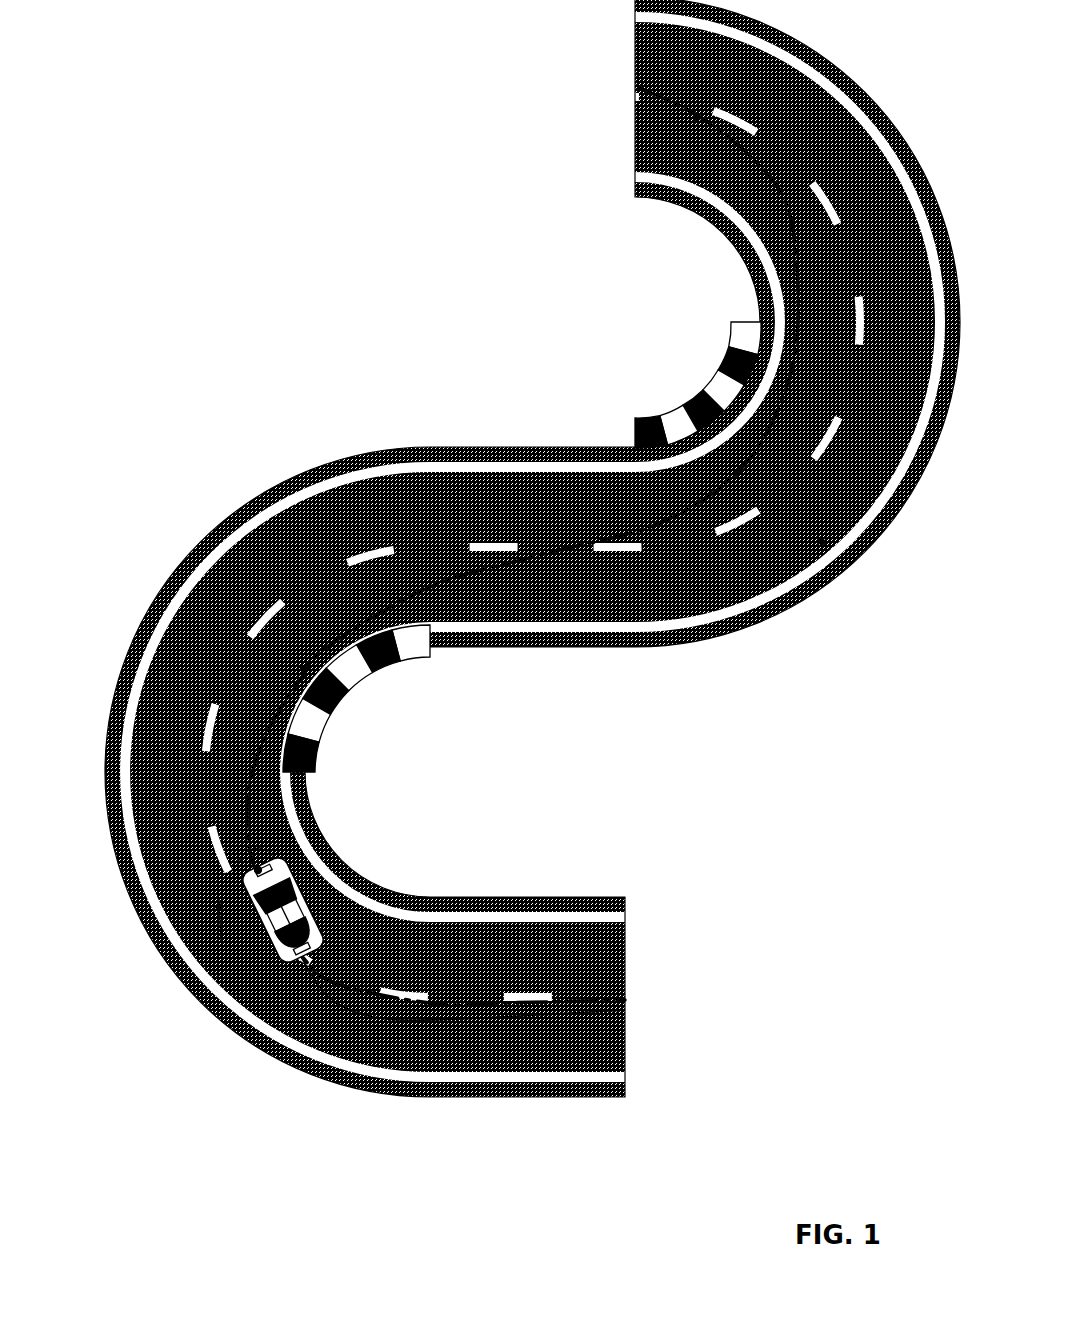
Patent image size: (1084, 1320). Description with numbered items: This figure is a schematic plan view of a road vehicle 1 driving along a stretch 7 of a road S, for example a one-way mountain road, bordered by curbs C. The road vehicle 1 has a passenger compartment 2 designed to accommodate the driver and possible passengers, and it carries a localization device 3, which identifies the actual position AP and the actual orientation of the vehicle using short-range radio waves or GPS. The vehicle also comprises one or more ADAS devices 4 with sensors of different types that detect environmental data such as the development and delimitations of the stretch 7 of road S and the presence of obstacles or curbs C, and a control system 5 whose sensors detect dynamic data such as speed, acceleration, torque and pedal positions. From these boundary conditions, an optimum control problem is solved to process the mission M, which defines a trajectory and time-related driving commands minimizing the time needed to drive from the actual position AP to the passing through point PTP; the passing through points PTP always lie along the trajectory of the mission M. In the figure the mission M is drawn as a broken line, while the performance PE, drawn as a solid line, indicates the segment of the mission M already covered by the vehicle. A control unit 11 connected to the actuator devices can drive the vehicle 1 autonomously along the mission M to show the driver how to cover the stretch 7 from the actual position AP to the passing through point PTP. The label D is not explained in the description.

The road S is at (136, 621).
The stretch of road 7 is at (545, 452).
The curbs C is at (677, 418).
The mission M is at (371, 601).
The performance PE is at (445, 1029).
The passing through point PTP is at (697, 118).
The road width distance D is at (530, 627).
The actual position AP is at (240, 866).
The road vehicle 1 is at (256, 965).
The control unit 11 is at (278, 860).
The passenger compartment 2 is at (311, 889).
The localization device 3 is at (290, 928).
The control system 5 is at (300, 950).
The ADAS devices 4 is at (280, 963).